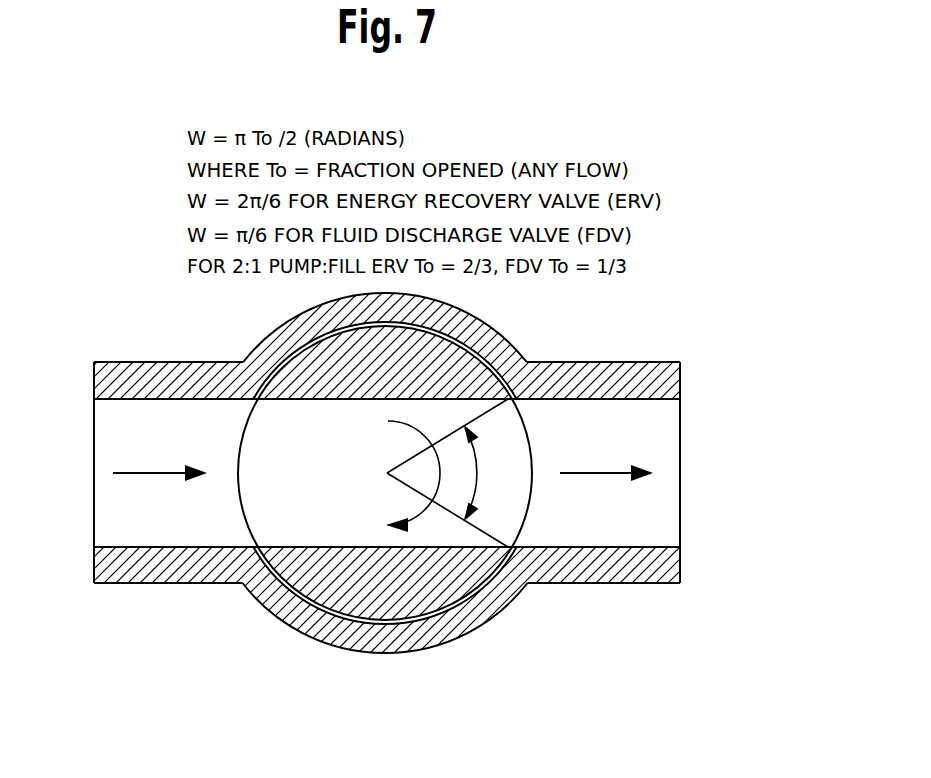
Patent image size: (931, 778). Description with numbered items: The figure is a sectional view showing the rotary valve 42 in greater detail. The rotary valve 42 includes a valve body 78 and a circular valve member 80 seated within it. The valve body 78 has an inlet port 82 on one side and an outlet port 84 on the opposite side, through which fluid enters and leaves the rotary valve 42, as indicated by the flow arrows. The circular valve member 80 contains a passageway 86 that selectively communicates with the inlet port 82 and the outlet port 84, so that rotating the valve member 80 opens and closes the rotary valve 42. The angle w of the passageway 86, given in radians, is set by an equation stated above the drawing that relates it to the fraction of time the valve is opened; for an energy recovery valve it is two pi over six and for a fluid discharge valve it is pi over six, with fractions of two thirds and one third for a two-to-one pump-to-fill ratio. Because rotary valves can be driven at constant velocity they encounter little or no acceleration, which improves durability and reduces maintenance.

The rotary valve 42 is at (465, 491).
The valve body 78 is at (497, 332).
The circular valve member 80 is at (438, 580).
The inlet port 82 is at (105, 524).
The outlet port 84 is at (665, 527).
The passageway 86 is at (257, 445).